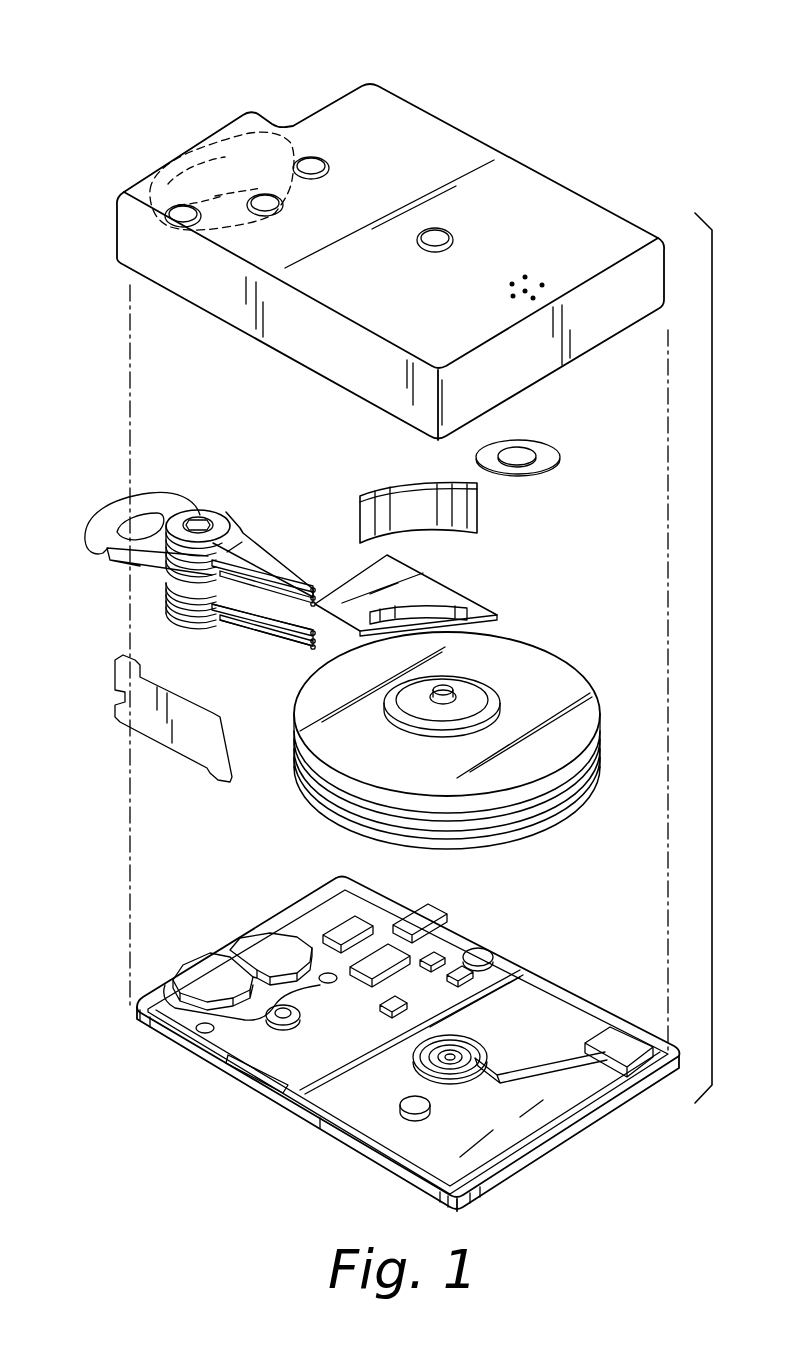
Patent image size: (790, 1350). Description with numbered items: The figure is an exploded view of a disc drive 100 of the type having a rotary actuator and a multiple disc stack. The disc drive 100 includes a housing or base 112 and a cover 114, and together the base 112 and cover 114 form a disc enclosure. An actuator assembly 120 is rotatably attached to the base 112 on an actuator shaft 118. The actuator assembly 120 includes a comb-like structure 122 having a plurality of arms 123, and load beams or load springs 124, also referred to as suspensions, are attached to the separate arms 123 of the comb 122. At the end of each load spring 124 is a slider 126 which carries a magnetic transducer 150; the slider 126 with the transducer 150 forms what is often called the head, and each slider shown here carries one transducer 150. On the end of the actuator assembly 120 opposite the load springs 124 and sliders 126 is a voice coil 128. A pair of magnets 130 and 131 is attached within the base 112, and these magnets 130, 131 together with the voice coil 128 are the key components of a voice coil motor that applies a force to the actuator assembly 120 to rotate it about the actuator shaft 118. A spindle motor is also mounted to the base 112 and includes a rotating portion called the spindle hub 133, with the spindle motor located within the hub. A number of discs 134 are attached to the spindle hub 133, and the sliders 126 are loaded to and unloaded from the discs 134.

The disc drive 100 is at (528, 55).
The base 112 is at (570, 1012).
The cover 114 is at (537, 192).
The actuator shaft 118 is at (200, 518).
The actuator assembly 120 is at (152, 572).
The comb-like structure 122 is at (217, 628).
The arms 123 is at (250, 535).
The load springs 124 is at (271, 562).
The slider 126 is at (313, 592).
The voice coil 128 is at (107, 523).
The magnet 130 is at (213, 153).
The magnet 131 is at (195, 978).
The spindle hub 133 is at (450, 700).
The discs 134 is at (568, 676).
The magnetic transducer 150 is at (333, 588).